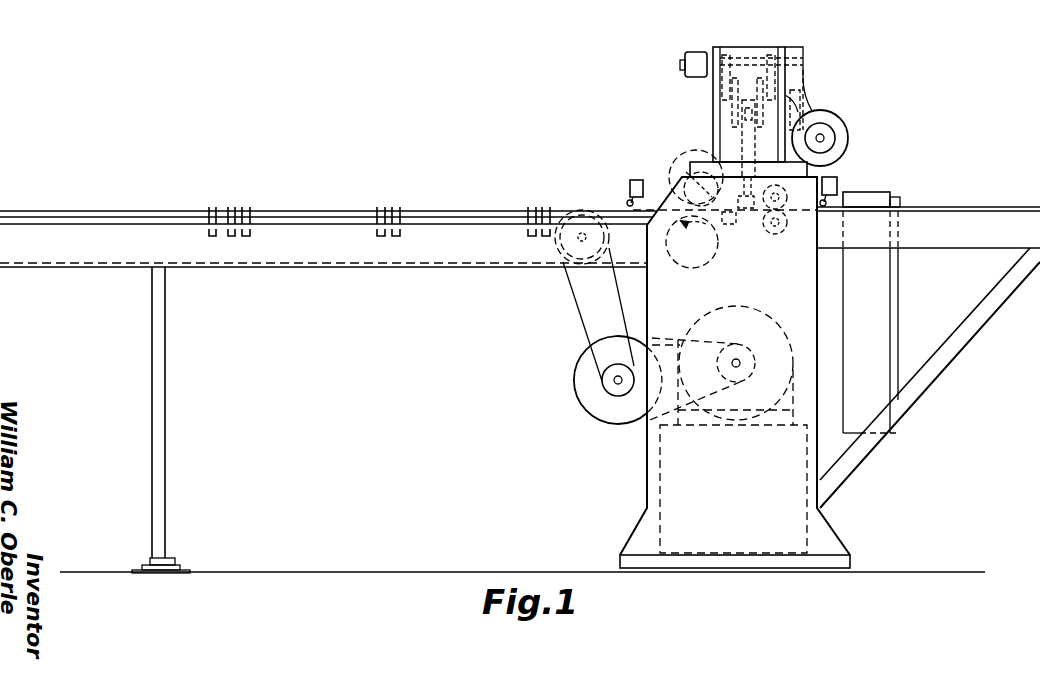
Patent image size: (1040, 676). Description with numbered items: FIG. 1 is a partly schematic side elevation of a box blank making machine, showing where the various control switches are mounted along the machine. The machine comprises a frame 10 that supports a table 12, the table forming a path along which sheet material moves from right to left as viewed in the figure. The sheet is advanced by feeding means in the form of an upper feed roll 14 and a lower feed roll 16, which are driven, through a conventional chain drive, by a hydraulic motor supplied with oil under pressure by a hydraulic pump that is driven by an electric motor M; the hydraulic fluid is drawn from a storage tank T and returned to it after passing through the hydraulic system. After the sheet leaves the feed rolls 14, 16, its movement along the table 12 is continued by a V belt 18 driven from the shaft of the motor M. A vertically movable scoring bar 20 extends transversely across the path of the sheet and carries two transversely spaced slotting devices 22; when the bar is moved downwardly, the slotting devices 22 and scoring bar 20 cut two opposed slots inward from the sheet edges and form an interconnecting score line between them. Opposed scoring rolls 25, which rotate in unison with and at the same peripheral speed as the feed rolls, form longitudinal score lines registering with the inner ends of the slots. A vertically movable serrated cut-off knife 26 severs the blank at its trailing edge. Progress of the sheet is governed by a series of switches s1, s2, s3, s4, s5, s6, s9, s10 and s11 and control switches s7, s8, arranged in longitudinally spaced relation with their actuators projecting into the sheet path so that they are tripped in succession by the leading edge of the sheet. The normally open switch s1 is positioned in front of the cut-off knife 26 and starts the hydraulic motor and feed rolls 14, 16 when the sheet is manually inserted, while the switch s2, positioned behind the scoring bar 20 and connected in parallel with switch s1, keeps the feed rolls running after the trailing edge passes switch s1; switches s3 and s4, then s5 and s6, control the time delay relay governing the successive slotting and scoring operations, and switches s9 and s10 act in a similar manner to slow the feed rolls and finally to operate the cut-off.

The frame 10 is at (647, 483).
The table 12 is at (972, 208).
The upper feed roll 14 is at (790, 222).
The lower feed roll 16 is at (774, 236).
The V belt 18 is at (137, 212).
The scoring bar 20 is at (696, 167).
The slotting devices 22 is at (701, 189).
The scoring rolls 25 is at (669, 177).
The cut-off knife 26 is at (822, 200).
The switch s1 is at (838, 187).
The switch s2 is at (630, 187).
The switch s3 is at (731, 230).
The switch s4 is at (698, 240).
The switch s5 is at (546, 217).
The switch s6 is at (530, 217).
The control switch s7 is at (397, 220).
The control switch s8 is at (381, 220).
The switch s9 is at (248, 212).
The switch s10 is at (231, 222).
The switch s11 is at (212, 222).
The electric motor M is at (728, 429).
The storage tank T is at (730, 543).